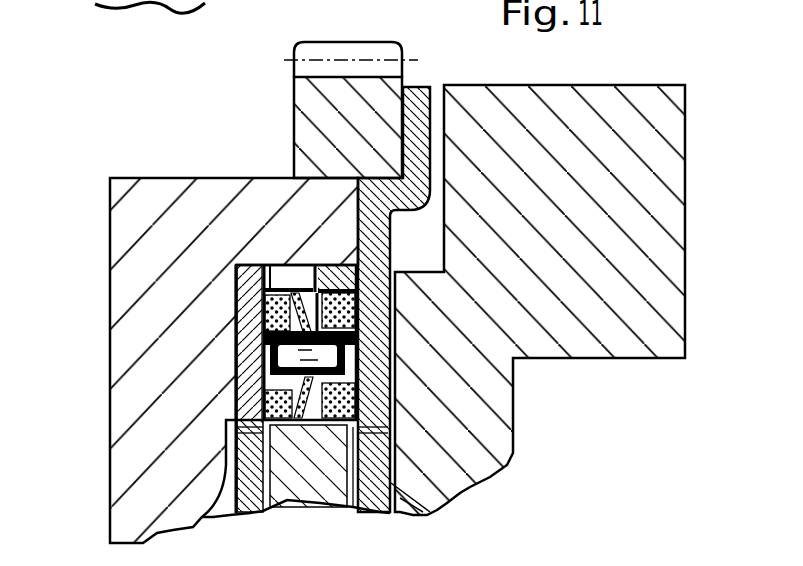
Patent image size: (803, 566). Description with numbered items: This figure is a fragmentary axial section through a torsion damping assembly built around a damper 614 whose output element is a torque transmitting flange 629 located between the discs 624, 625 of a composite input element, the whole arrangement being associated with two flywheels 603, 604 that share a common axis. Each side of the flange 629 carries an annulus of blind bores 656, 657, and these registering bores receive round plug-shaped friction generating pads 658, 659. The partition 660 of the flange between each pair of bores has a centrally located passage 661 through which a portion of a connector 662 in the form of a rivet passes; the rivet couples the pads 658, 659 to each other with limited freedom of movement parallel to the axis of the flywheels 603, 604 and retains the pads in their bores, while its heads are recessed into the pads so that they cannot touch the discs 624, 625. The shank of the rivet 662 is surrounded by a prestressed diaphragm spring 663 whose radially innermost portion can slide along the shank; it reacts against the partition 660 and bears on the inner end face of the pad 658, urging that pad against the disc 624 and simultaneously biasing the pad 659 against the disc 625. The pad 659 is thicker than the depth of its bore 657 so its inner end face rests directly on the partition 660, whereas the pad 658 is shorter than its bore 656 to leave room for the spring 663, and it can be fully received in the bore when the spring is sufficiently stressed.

The flywheel 603 is at (135, 468).
The flywheel 604 is at (667, 160).
The damper 614 is at (88, 178).
The disc 624 is at (236, 322).
The disc 625 is at (360, 365).
The flange 629 is at (435, 512).
The blind bore 656 is at (272, 290).
The blind bore 657 is at (335, 290).
The pad 658 is at (240, 307).
The pad 659 is at (345, 417).
The partition 660 is at (302, 290).
The passage 661 is at (392, 270).
The connector 662 is at (236, 372).
The diaphragm spring 663 is at (303, 420).